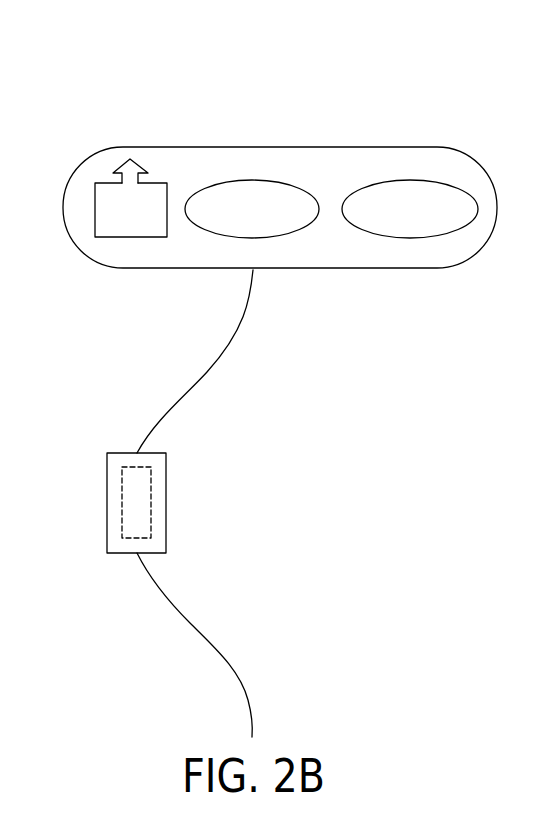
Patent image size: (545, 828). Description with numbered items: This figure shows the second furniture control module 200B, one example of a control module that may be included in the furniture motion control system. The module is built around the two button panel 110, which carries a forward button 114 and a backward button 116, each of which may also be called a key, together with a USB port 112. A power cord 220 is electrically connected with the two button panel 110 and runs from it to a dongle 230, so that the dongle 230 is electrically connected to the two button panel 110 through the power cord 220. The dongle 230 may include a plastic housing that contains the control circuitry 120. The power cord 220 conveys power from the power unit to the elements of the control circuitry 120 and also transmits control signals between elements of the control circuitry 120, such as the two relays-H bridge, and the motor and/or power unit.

The second furniture control module 200B is at (268, 108).
The two button panel 110 is at (477, 163).
The USB port 112 is at (167, 182).
The forward button 114 is at (290, 234).
The backward button 116 is at (375, 184).
The power cord 220 is at (169, 401).
The control circuitry 120 is at (122, 503).
The dongle 230 is at (166, 503).